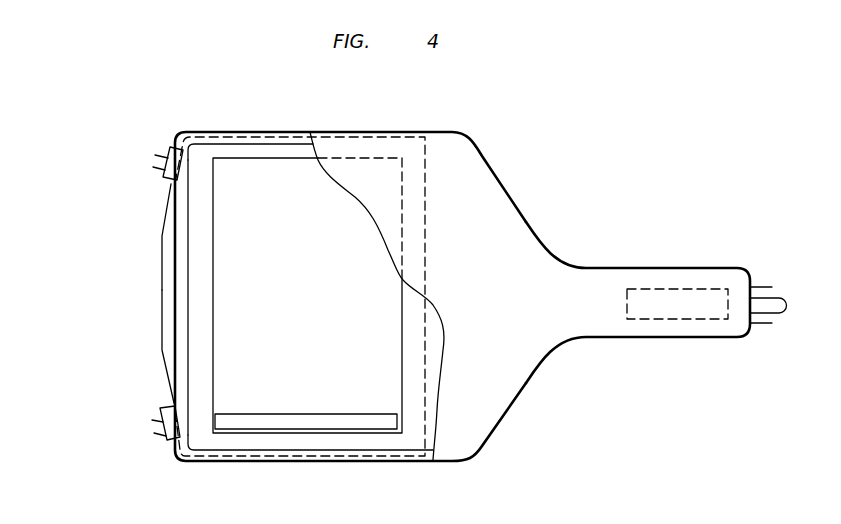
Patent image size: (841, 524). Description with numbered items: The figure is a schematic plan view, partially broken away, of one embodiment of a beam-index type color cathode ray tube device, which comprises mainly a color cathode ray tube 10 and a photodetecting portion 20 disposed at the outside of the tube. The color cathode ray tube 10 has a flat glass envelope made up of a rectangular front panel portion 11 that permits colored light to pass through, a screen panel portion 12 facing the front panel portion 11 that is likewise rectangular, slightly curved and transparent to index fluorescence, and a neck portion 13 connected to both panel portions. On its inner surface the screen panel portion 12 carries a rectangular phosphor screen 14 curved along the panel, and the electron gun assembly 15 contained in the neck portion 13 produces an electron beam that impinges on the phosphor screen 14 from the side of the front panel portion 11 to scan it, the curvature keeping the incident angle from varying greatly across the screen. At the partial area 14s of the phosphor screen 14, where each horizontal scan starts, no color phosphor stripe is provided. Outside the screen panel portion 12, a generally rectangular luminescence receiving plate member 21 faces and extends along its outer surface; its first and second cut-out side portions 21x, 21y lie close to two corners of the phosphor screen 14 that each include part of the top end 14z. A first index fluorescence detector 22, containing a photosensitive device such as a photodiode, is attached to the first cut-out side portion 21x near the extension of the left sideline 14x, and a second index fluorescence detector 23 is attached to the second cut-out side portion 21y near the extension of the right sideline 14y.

The color cathode ray tube 10 is at (534, 221).
The front panel portion 11 is at (362, 170).
The screen panel portion 12 is at (387, 442).
The neck portion 13 is at (558, 345).
The phosphor screen 14 is at (273, 296).
The partial area of phosphor screen 14s is at (267, 420).
The left sideline of phosphor screen 14x is at (325, 435).
The right sideline of phosphor screen 14y is at (232, 158).
The top end of phosphor screen 14z is at (211, 274).
The electron gun assembly 15 is at (683, 322).
The photodetecting portion 20 is at (310, 289).
The luminescence receiving plate member 21 is at (425, 403).
The first cut-out side portion 21x is at (162, 357).
The second cut-out side portion 21y is at (165, 214).
The first index fluorescence detector 22 is at (157, 427).
The second index fluorescence detector 23 is at (157, 155).